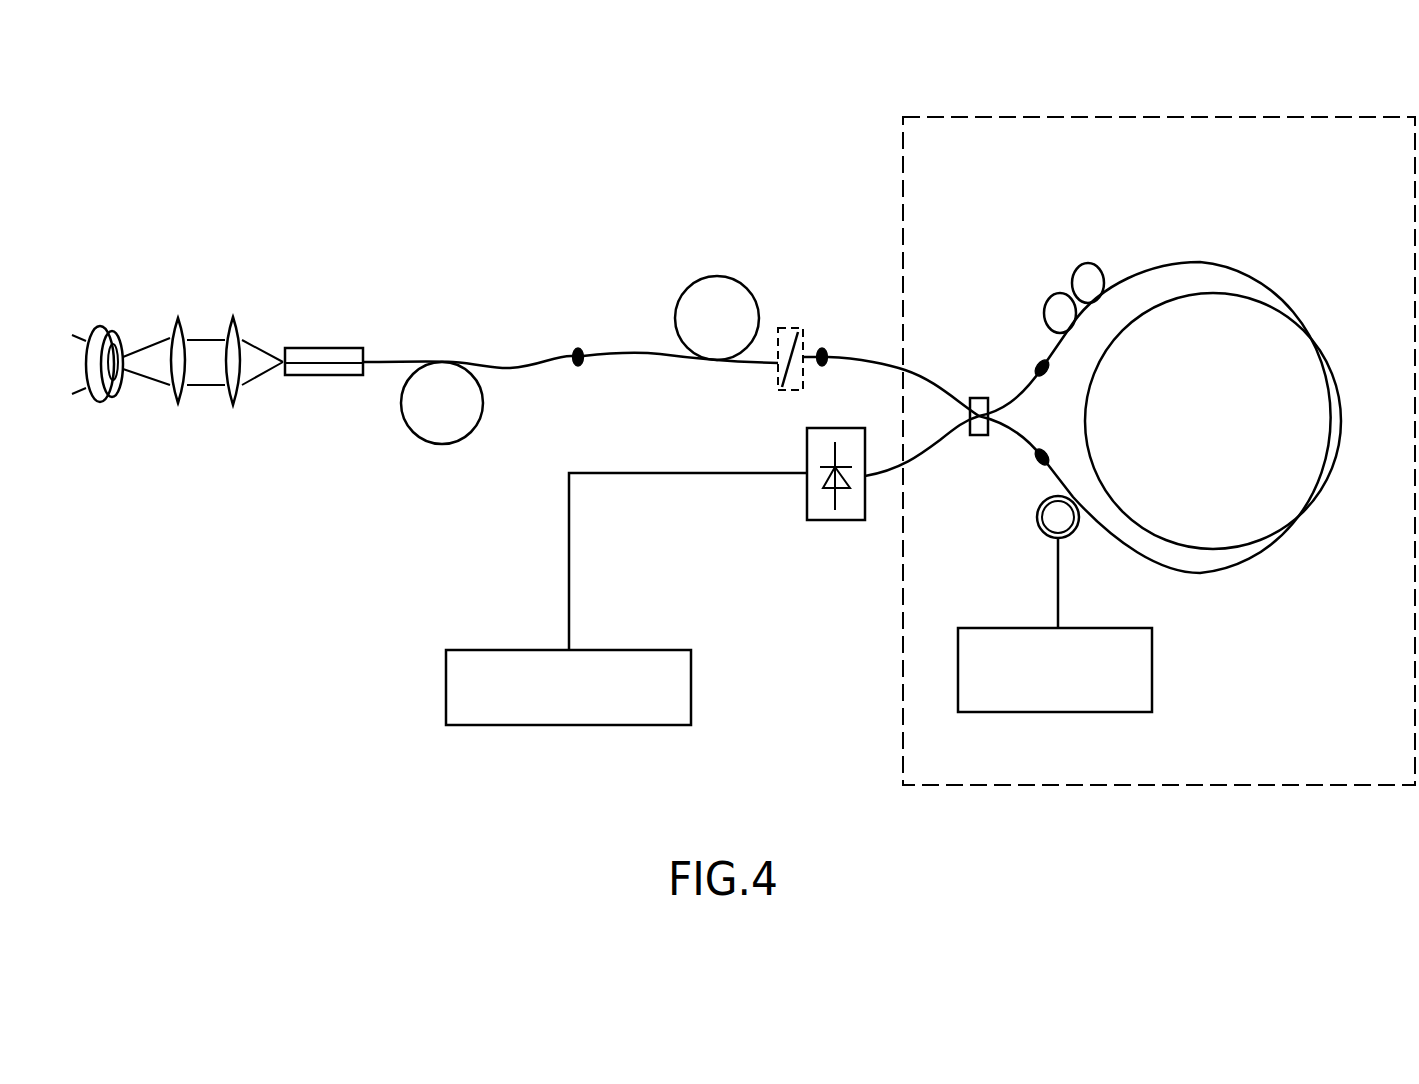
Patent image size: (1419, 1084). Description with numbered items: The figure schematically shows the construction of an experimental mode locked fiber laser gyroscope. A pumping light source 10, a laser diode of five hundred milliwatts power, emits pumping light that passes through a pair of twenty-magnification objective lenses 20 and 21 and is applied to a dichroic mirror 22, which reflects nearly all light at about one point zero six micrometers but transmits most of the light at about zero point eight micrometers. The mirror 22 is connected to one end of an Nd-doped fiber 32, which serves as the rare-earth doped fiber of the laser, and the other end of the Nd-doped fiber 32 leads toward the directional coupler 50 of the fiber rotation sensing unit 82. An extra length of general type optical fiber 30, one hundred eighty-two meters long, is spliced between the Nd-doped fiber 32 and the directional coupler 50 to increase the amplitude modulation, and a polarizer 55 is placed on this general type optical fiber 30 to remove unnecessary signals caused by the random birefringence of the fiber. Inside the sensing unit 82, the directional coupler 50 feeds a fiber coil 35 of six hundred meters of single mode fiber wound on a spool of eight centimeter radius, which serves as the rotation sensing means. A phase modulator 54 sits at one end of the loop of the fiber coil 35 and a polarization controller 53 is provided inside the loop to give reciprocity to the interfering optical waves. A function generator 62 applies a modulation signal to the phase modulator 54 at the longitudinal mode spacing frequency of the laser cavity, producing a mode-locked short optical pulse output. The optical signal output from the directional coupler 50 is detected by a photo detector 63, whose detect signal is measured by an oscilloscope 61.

The pumping light source 10 is at (110, 330).
The objective lens 20 is at (177, 407).
The objective lens 21 is at (233, 406).
The dichroic mirror 22 is at (313, 348).
The general type optical fiber 30 is at (725, 277).
The Nd-doped fiber 32 is at (412, 443).
The polarizer 55 is at (778, 370).
The directional coupler 50 is at (980, 397).
The polarization controller 53 is at (1060, 293).
The fiber coil 35 is at (1265, 468).
The phase modulator 54 is at (1037, 521).
The photo detector 63 is at (842, 520).
The oscilloscope 61 is at (587, 702).
The function generator 62 is at (1078, 686).
The fiber rotation sensing unit 82 is at (1012, 133).